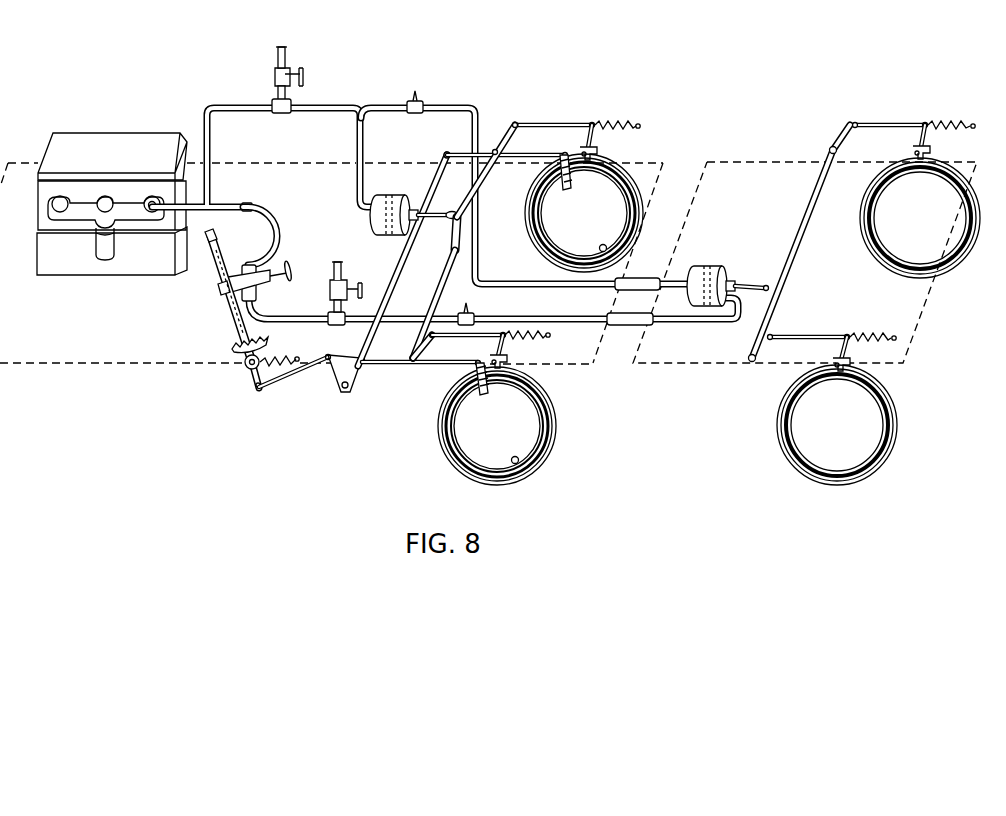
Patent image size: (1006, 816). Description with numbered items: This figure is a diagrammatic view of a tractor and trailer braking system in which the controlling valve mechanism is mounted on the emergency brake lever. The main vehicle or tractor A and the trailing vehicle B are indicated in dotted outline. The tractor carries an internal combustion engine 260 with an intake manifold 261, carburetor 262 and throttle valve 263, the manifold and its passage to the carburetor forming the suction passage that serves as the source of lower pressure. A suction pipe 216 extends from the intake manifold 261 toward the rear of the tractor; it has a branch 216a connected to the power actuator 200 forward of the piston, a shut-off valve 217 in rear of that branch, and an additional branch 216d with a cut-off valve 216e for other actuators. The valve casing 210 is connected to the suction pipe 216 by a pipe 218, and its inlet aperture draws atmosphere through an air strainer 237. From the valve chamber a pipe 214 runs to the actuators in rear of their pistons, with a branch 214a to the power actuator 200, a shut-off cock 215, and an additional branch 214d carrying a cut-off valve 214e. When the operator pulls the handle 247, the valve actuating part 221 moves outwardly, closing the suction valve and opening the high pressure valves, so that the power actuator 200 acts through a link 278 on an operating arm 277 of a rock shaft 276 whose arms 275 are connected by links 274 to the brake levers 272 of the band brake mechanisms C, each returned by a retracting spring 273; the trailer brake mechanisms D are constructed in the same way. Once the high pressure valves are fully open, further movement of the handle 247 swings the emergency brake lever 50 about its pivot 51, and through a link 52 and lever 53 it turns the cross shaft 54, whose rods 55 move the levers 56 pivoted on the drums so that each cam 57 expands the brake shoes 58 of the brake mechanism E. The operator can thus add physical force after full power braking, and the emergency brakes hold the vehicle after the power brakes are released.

The internal combustion engine 260 is at (112, 204).
The intake manifold 261 is at (67, 210).
The carburetor 262 is at (115, 257).
The throttle valve 263 is at (110, 245).
The suction pipe 216 is at (210, 138).
The branch of suction pipe 216a is at (357, 142).
The additional branch of suction pipe 216d is at (277, 57).
The cut-off valve 216e is at (274, 80).
The shut-off valve 217 is at (420, 101).
The pipe 218 is at (277, 229).
The pipe 214 is at (282, 315).
The branch of pipe 214a is at (400, 320).
The additional branch of pipe 214d is at (332, 307).
The cut-off valve 214e is at (343, 275).
The shut-off cock 215 is at (477, 313).
The valve casing 210 is at (262, 266).
The valve actuating part 221 is at (277, 278).
The handle 247 is at (290, 267).
The air strainer 237 is at (220, 289).
The emergency brake lever 50 is at (243, 349).
The pivot 51 is at (250, 364).
The link 52 is at (305, 382).
The lever 53 is at (356, 390).
The cross shaft 54 is at (390, 282).
The rods 55 is at (393, 368).
The levers 56 is at (453, 387).
The cam 57 is at (487, 397).
The brake shoes 58 is at (538, 432).
The power actuator 200 is at (388, 197).
The link 278 is at (437, 213).
The operating arm 277 is at (460, 237).
The rock shaft 276 is at (441, 297).
The arms 275 is at (425, 345).
The links 274 is at (470, 337).
The retracting spring 273 is at (557, 335).
The brake lever 272 is at (505, 350).
The main vehicle or tractor A is at (148, 365).
The trailing vehicle B is at (706, 365).
The brake mechanism C is at (637, 185).
The brake mechanism D is at (833, 303).
The brake mechanism E is at (537, 322).